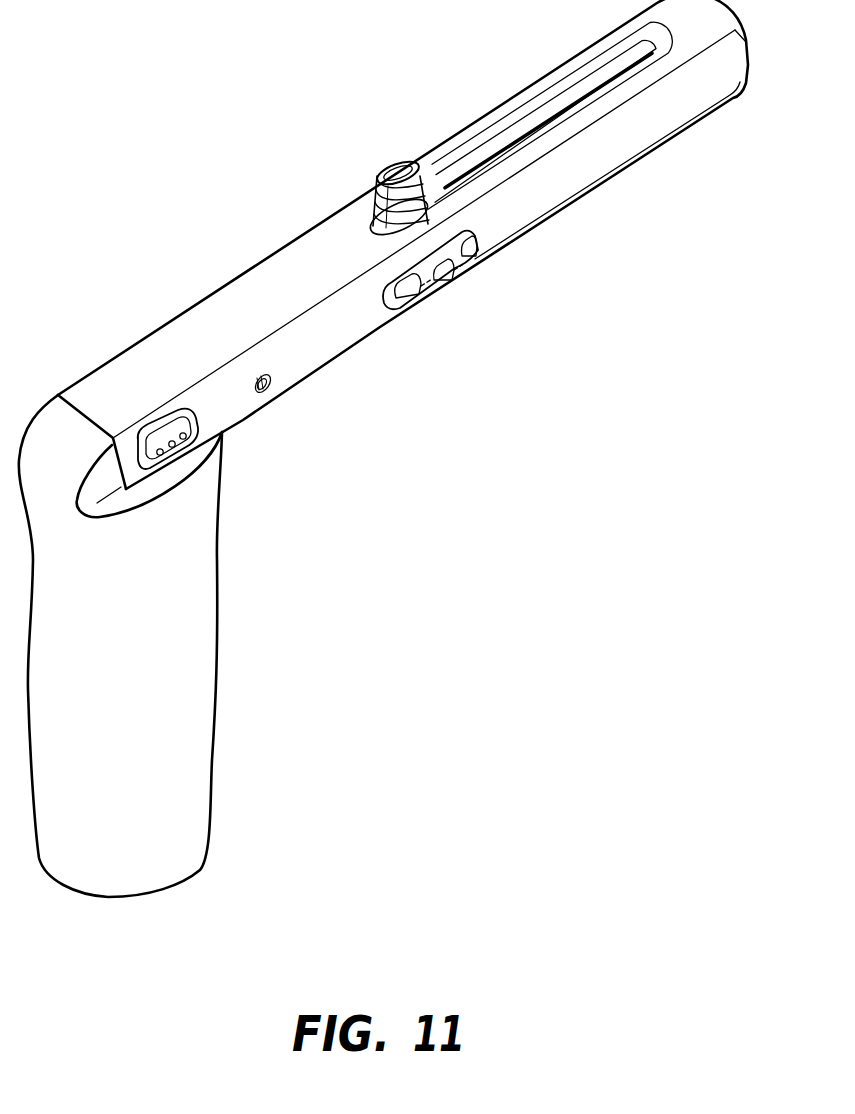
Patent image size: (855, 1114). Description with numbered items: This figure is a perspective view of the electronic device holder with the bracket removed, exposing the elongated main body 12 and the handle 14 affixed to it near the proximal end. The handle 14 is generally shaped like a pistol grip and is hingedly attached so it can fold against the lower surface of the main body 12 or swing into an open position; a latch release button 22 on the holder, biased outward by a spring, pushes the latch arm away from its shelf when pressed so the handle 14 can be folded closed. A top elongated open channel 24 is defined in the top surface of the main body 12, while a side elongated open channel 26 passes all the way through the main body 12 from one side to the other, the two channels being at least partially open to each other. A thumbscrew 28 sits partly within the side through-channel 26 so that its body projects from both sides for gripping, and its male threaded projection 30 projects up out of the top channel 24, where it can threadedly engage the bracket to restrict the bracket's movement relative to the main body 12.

The main body 12 is at (208, 320).
The handle 14 is at (175, 620).
The latch release button 22 is at (187, 443).
The top elongated open channel 24 is at (577, 97).
The side elongated open channel 26 is at (597, 162).
The thumbscrew 28 is at (463, 267).
The male threaded projection 30 is at (383, 172).